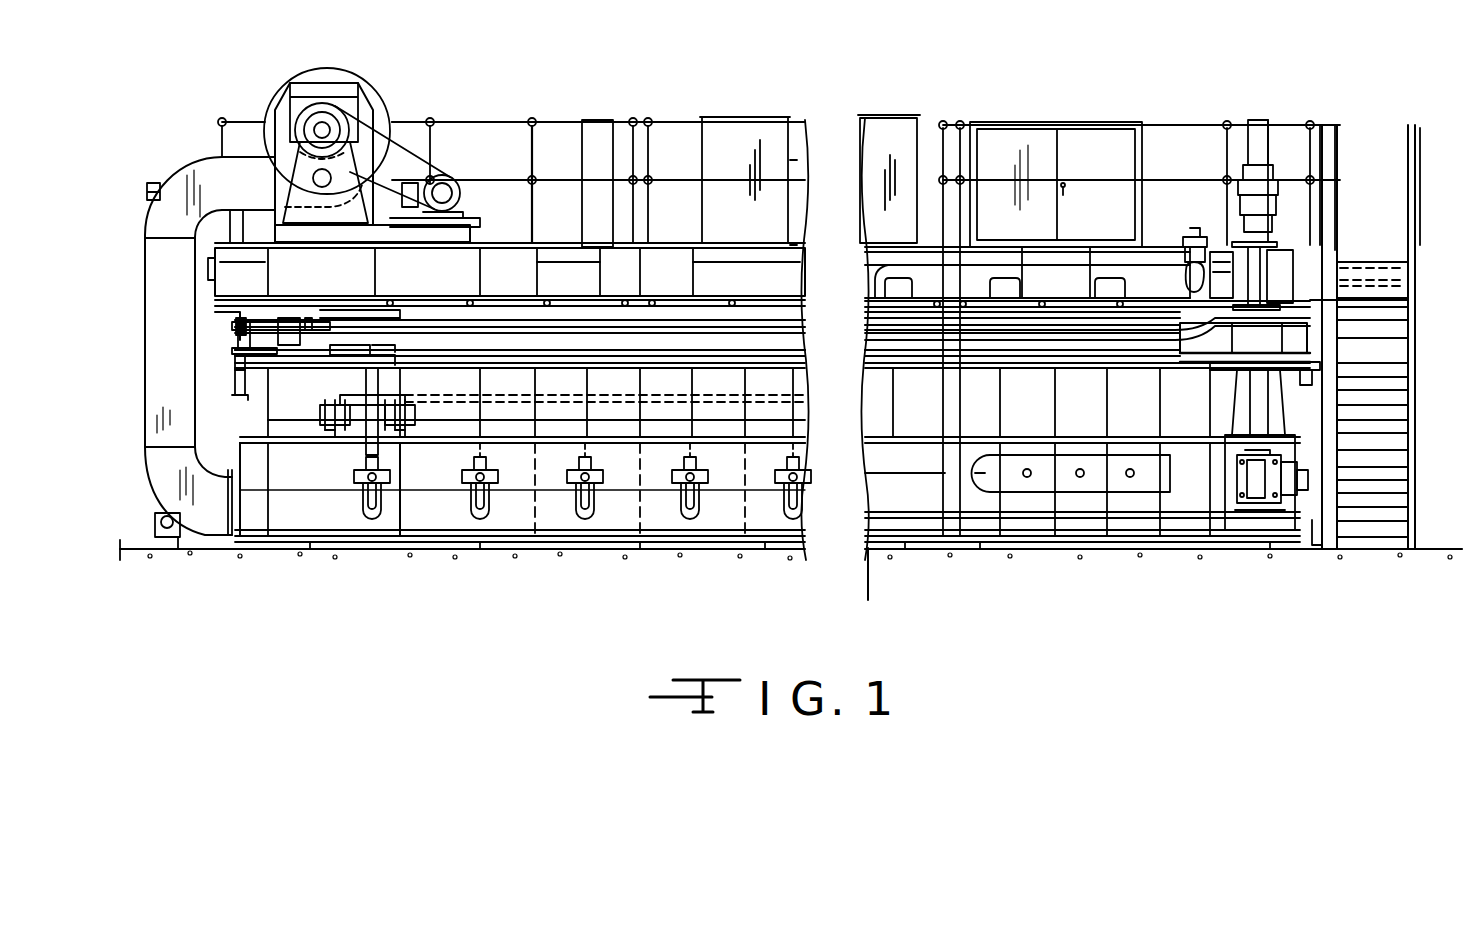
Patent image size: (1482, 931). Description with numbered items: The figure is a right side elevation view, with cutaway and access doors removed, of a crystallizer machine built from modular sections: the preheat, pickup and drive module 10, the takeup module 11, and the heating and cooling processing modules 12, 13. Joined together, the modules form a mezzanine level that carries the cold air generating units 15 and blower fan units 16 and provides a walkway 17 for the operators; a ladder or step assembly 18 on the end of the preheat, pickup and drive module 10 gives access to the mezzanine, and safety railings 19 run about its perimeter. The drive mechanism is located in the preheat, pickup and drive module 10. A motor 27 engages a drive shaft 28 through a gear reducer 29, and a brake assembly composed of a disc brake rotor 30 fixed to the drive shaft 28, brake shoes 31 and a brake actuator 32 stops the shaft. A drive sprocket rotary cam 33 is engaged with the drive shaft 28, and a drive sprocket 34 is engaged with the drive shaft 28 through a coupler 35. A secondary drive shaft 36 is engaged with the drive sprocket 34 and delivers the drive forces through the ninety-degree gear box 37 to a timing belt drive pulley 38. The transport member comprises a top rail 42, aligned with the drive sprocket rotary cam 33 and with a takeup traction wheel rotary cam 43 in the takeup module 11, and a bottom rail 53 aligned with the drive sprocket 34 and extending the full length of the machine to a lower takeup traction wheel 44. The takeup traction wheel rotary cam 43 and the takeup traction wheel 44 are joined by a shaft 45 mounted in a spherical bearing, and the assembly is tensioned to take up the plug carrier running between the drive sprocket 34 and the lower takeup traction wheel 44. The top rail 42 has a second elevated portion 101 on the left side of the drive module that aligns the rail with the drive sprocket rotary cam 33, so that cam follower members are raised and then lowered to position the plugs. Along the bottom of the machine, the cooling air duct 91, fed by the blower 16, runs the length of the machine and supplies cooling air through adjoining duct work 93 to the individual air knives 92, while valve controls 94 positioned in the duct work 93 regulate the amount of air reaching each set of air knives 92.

The preheat, pickup and drive module 10 is at (1078, 570).
The takeup module 11 is at (395, 590).
The heating and cooling processing module 12 is at (917, 568).
The heating and cooling processing module 13 is at (690, 560).
The cold air generating unit 15 is at (750, 135).
The blower fan unit 16 is at (330, 70).
The walkway 17 is at (525, 130).
The ladder or step assembly 18 is at (1350, 540).
The safety railing 19 is at (558, 120).
The motor 27 is at (1258, 130).
The drive shaft 28 is at (1275, 185).
The gear reducer 29 is at (1270, 215).
The disc brake rotor 30 is at (1222, 252).
The brake shoes 31 is at (1200, 230).
The brake actuator 32 is at (1215, 260).
The drive sprocket rotary cam 33 is at (1320, 312).
The drive sprocket 34 is at (1305, 385).
The coupler 35 is at (1265, 338).
The secondary drive shaft 36 is at (1258, 410).
The 90° gear box 37 is at (1250, 540).
The timing belt drive pulley 38 is at (1310, 480).
The top rail 42 is at (572, 332).
The takeup traction wheel rotary cam 43 is at (243, 320).
The lower takeup traction wheel 44 is at (236, 372).
The shaft 45 is at (236, 330).
The bottom rail 53 is at (460, 355).
The cooling air duct 91 is at (200, 540).
The air knives 92 is at (370, 425).
The duct work 93 is at (390, 465).
The valve controls 94 is at (500, 500).
The second elevated portion 101 is at (1175, 368).